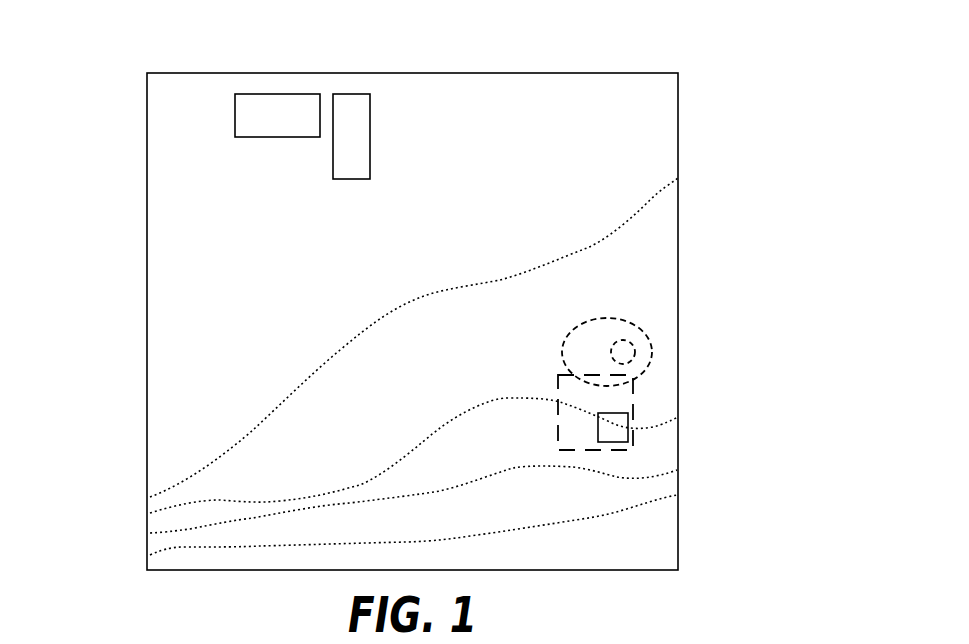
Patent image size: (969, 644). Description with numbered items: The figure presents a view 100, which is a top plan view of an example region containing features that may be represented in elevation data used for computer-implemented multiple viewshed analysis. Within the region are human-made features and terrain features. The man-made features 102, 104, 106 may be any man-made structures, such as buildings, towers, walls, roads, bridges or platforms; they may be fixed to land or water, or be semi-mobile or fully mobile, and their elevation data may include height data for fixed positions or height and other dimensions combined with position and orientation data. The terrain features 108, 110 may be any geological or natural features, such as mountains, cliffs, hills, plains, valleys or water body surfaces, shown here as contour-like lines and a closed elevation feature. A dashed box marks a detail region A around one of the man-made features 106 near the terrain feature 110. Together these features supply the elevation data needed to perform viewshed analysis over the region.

The view 100 is at (746, 111).
The man-made feature 102 is at (348, 103).
The man-made feature 104 is at (236, 119).
The man-made feature 106 is at (615, 432).
The terrain feature 108 is at (250, 548).
The terrain feature 110 is at (627, 348).
The detail region A is at (588, 453).